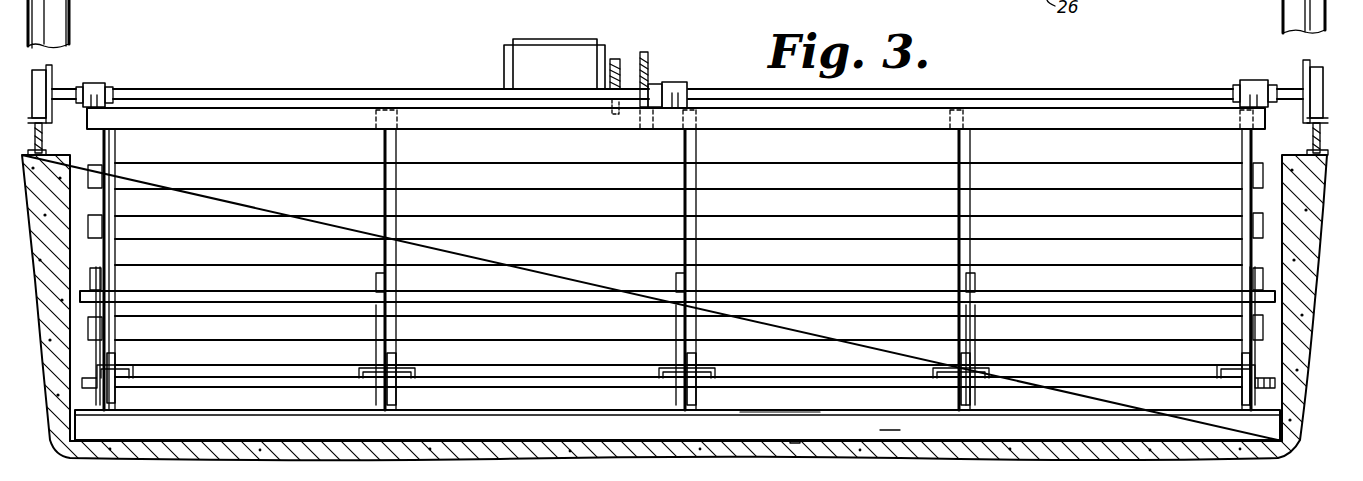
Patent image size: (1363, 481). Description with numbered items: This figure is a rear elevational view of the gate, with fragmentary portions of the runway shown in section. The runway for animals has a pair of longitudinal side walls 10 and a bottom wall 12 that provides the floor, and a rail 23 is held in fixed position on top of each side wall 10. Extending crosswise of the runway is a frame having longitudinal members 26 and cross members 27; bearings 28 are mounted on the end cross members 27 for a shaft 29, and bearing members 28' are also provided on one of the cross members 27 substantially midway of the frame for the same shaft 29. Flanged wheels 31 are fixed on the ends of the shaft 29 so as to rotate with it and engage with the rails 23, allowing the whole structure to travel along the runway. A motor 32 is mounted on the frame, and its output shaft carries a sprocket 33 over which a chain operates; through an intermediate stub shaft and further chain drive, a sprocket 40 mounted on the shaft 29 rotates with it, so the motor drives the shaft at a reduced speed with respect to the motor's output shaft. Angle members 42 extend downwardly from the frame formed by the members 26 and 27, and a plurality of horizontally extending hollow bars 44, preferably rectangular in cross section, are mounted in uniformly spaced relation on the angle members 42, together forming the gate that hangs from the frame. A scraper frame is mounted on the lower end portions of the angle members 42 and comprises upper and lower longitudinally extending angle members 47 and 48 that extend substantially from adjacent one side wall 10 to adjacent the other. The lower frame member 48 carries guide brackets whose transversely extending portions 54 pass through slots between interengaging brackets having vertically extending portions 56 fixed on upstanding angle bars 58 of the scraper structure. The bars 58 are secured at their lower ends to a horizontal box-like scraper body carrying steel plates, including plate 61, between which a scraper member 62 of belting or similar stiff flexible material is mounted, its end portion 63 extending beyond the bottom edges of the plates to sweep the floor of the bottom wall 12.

The side wall 10 is at (62, 170).
The bottom wall 12 is at (1020, 440).
The rail 23 is at (43, 141).
The longitudinal member 26 is at (258, 116).
The cross member 27 is at (378, 125).
The bearing 28 is at (676, 82).
The bearing member 28' is at (689, 81).
The shaft 29 is at (987, 90).
The flanged wheel 31 is at (40, 78).
The motor 32 is at (557, 45).
The sprocket 33 is at (613, 60).
The sprocket 40 is at (649, 84).
The angle member 42 is at (116, 205).
The hollow bar 44 is at (543, 183).
The angle member 47 is at (470, 298).
The angle member 48 is at (500, 386).
The transversely extending portion 54 is at (125, 368).
The vertically extending portion 56 is at (113, 358).
The upstanding angle bar 58 is at (101, 282).
The steel plate 61 is at (892, 402).
The scraper member 62 is at (740, 412).
The end portion 63 is at (795, 441).